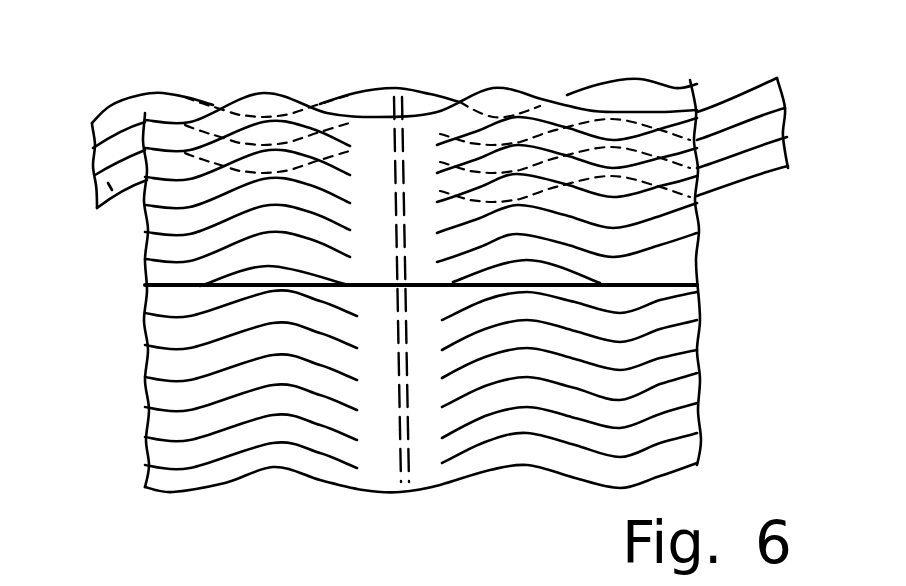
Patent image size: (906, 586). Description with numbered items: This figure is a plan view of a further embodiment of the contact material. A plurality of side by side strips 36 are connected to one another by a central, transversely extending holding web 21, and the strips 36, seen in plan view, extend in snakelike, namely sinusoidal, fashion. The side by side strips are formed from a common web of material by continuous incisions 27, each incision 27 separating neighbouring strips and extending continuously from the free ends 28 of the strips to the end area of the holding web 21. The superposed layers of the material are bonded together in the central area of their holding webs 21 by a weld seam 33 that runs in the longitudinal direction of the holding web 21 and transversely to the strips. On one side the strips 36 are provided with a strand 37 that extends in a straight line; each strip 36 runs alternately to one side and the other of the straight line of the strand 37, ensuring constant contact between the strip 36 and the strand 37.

The holding web 21 is at (390, 106).
The incisions 27 is at (772, 122).
The free ends 28 is at (702, 447).
The weld seam 33 is at (412, 448).
The strips 36 is at (680, 83).
The strand 37 is at (700, 283).